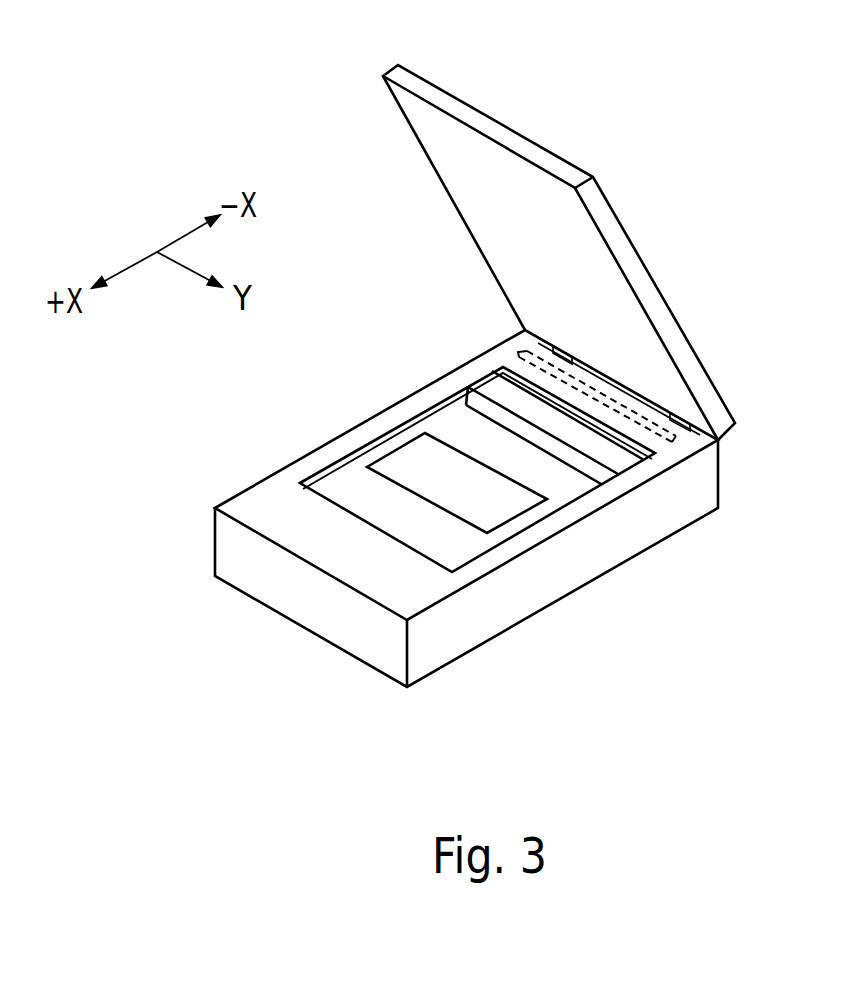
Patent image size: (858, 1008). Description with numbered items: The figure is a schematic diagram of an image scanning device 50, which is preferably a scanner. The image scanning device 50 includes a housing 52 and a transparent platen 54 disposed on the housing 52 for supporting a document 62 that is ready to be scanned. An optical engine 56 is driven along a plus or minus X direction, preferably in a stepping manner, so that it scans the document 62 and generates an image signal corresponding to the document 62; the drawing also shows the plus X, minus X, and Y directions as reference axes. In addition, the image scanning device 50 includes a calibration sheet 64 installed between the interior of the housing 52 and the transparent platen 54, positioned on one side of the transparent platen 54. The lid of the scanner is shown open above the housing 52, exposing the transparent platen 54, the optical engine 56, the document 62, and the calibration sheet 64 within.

The image scanning device 50 is at (288, 170).
The housing 52 is at (675, 503).
The transparent platen 54 is at (355, 492).
The optical engine 56 is at (510, 393).
The document 62 is at (473, 496).
The calibration sheet 64 is at (676, 440).